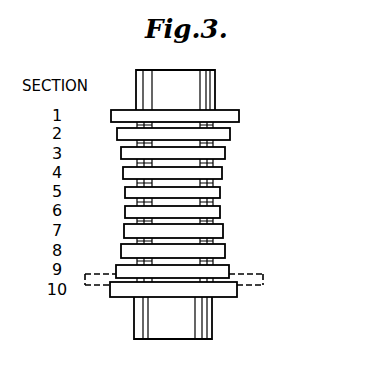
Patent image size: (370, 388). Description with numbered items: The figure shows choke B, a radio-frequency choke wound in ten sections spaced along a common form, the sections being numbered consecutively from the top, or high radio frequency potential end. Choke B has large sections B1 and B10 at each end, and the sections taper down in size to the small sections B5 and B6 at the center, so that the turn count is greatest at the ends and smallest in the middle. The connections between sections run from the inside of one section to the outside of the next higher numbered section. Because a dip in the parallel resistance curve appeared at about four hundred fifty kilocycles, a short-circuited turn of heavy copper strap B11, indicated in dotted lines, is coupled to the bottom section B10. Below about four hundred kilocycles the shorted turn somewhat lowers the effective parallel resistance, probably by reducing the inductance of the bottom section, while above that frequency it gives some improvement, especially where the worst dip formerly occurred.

The choke B is at (230, 85).
The large end section B1 is at (241, 115).
The small center section B5 is at (222, 195).
The small center section B6 is at (222, 213).
The bottom section B10 is at (238, 297).
The short-circuited turn of heavy copper strap B11 is at (265, 272).